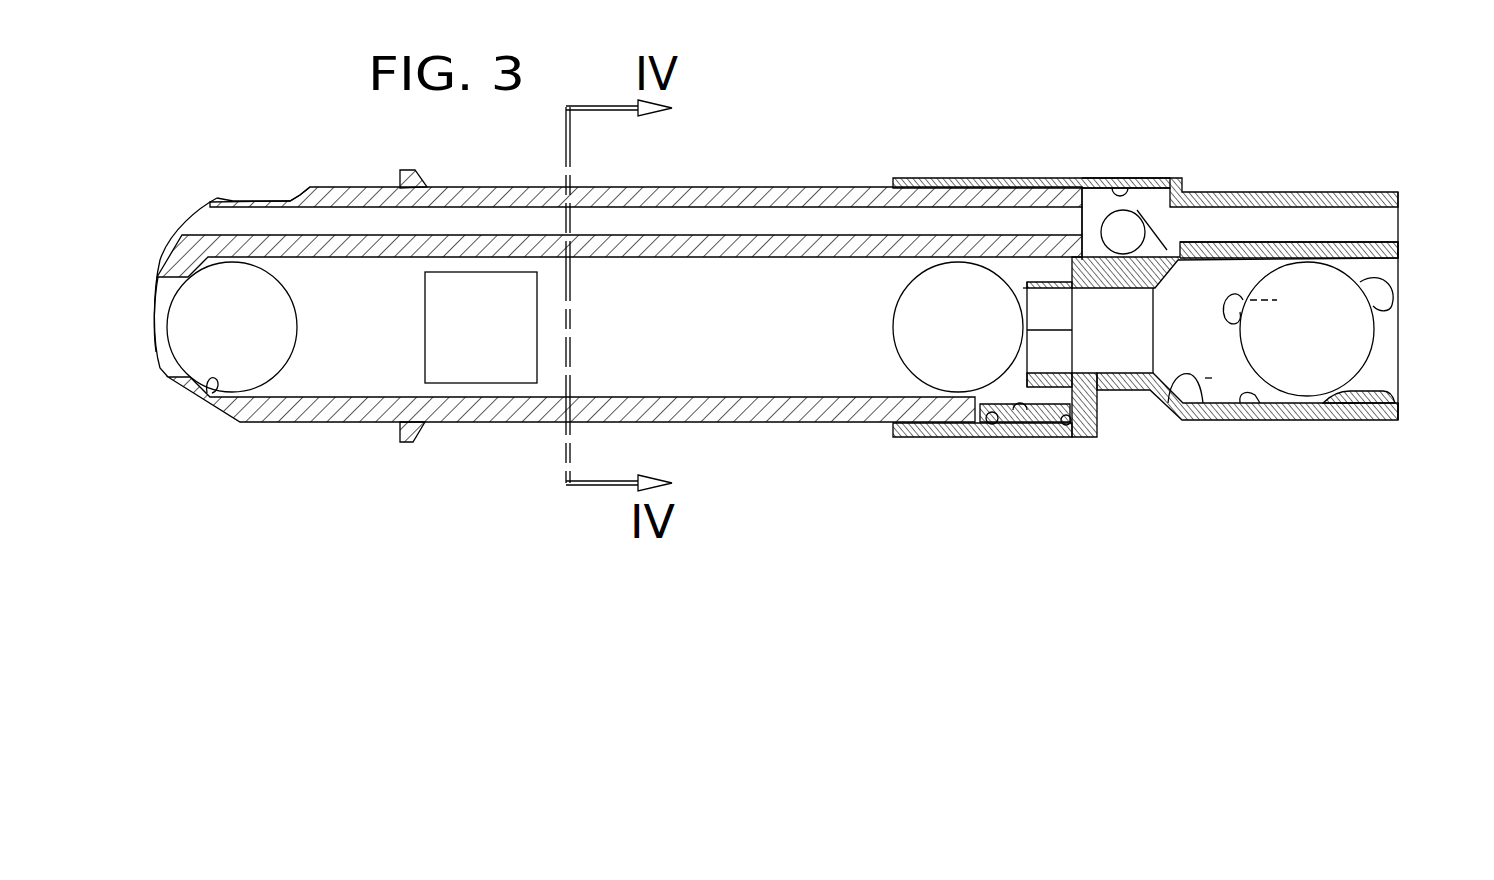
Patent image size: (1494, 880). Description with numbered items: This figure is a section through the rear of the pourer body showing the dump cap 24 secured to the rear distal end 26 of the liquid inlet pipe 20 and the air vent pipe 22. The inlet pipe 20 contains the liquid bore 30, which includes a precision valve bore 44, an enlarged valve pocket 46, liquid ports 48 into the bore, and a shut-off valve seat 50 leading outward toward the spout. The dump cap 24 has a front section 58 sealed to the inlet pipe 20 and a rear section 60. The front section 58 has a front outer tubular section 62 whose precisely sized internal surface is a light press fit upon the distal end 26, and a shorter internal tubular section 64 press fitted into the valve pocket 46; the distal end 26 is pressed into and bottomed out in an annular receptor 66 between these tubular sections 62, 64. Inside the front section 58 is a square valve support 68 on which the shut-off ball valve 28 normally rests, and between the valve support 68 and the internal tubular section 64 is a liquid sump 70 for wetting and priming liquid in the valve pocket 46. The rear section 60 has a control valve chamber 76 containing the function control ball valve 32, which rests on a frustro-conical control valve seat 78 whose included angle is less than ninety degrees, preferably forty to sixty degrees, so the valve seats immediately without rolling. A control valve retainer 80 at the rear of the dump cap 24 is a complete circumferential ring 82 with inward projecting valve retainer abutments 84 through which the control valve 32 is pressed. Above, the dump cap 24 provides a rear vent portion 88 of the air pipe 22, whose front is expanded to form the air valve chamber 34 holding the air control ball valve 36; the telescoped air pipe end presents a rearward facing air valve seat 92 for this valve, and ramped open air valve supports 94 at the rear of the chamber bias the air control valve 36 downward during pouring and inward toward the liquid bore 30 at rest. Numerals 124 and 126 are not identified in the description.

The liquid inlet pipe 20 is at (277, 425).
The air vent pipe 22 is at (327, 187).
The dump cap 24 is at (1110, 392).
The rear distal end 26 is at (1093, 437).
The shut-off ball valve 28 is at (277, 277).
The liquid bore 30 is at (164, 355).
The function control ball valve 32 is at (1280, 403).
The air valve chamber 34 is at (1113, 225).
The air control ball valve 36 is at (1118, 197).
The precision valve bore 44 is at (728, 258).
The enlarged valve pocket 46 is at (1000, 260).
The liquid ports 48 is at (452, 382).
The shut-off valve seat 50 is at (217, 390).
The front section 58 is at (918, 437).
The rear section 60 is at (1352, 420).
The front outer tubular section 62 is at (987, 425).
The internal tubular section 64 is at (1025, 430).
The annular receptor 66 is at (1053, 430).
The valve support 68 is at (1023, 310).
The liquid sump 70 is at (1017, 257).
The control valve chamber 76 is at (1240, 398).
The control valve seat 78 is at (1195, 378).
The control valve retainer 80 is at (1383, 420).
The circumferential ring 82 is at (1398, 408).
The valve retainer abutments 84 is at (1372, 390).
The rear vent portion 88 is at (1385, 231).
The air valve seat 92 is at (1077, 215).
The air valve supports 94 is at (1118, 175).
The ball guide 124 is at (1208, 380).
The guide arm 126 is at (1236, 290).